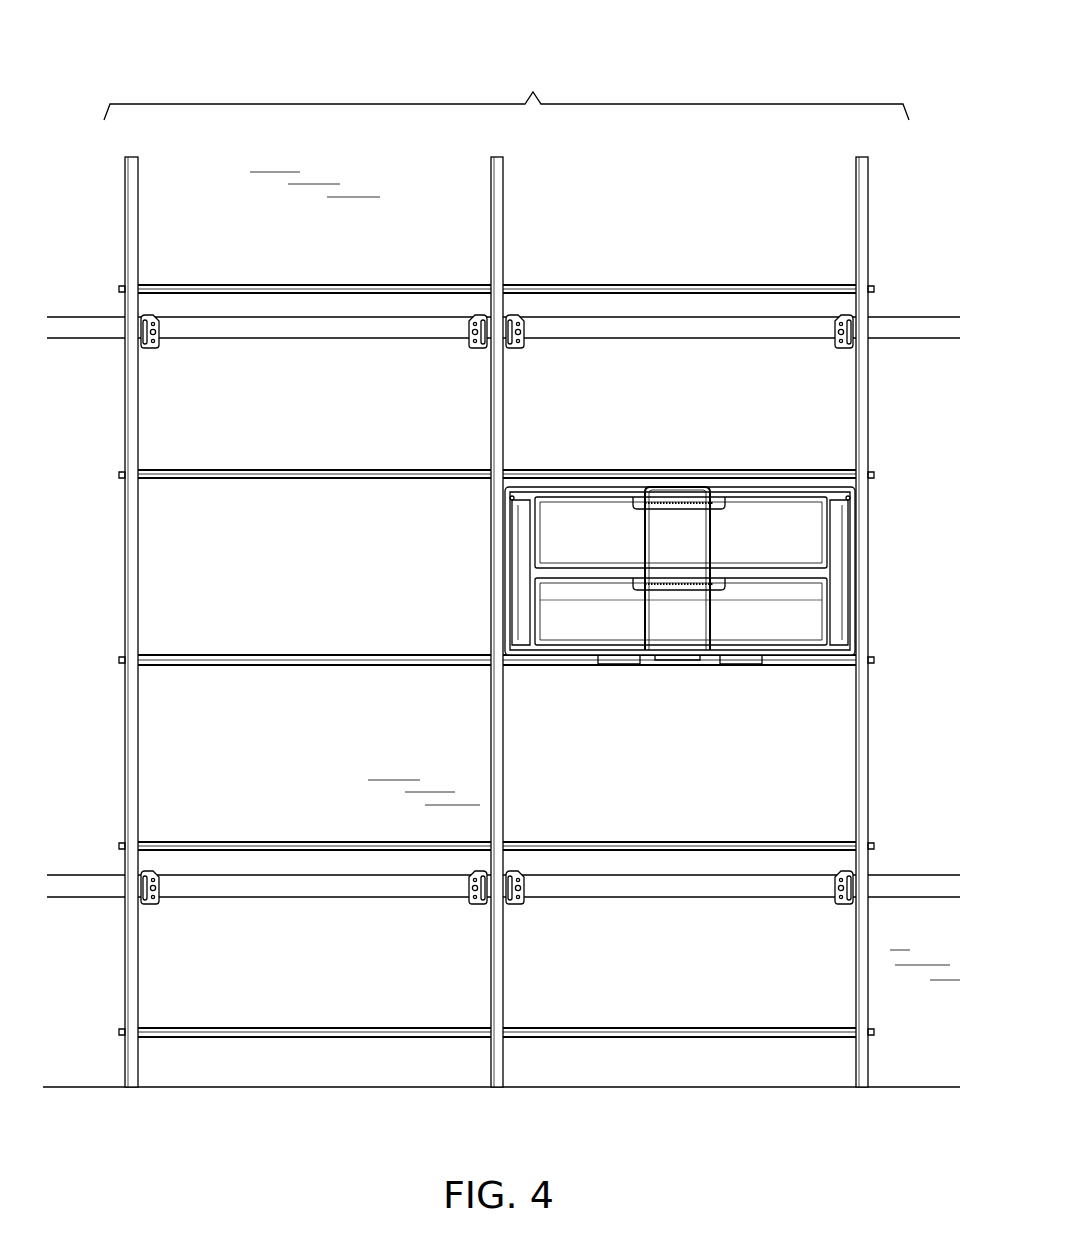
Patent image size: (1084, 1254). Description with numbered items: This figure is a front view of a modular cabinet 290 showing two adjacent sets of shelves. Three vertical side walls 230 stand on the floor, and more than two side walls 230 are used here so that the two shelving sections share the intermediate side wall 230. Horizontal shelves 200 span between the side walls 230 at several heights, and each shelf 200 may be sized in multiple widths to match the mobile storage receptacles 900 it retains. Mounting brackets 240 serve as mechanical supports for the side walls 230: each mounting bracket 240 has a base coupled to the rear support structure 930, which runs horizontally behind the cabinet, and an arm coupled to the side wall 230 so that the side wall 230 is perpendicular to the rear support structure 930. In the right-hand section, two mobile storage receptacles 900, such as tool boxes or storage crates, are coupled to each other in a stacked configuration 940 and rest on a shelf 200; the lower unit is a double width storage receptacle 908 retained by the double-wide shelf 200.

The shelf 200 is at (230, 480).
The side wall 230 is at (130, 1070).
The mounting bracket 240 is at (152, 316).
The modular cabinet 290 is at (506, 87).
The mobile storage receptacle 900 is at (612, 550).
The double width storage receptacle 908 is at (770, 612).
The rear support structure 930 is at (87, 318).
The stacked configuration 940 is at (731, 624).